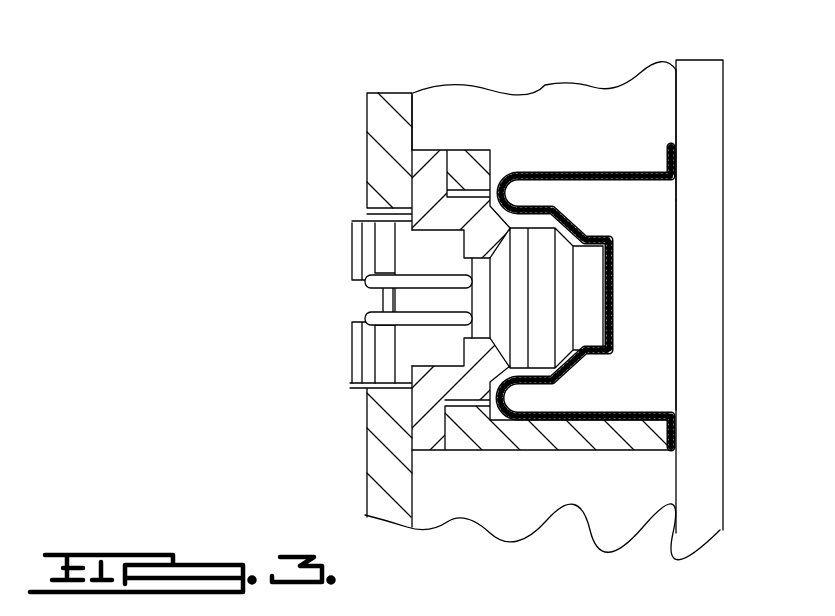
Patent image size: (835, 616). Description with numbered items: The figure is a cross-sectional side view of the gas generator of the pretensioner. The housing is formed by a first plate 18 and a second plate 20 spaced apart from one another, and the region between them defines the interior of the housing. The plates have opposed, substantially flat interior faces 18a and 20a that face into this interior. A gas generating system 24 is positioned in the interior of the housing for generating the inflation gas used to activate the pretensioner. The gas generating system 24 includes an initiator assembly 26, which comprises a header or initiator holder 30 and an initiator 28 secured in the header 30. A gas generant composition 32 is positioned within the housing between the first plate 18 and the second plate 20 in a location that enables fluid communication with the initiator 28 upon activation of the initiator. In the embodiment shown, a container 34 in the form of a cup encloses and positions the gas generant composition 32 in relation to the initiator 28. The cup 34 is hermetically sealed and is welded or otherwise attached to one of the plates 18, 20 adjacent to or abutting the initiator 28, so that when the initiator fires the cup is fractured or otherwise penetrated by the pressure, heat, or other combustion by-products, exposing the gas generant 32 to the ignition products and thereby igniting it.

The first plate 18 is at (717, 82).
The interior face of first plate 18a is at (675, 87).
The second plate 20 is at (367, 108).
The interior face of second plate 20a is at (415, 122).
The gas generating system 24 is at (345, 253).
The initiator assembly 26 is at (363, 230).
The initiator 28 is at (592, 325).
The header 30 is at (422, 191).
The gas generant composition 32 is at (653, 256).
The container 34 is at (598, 160).